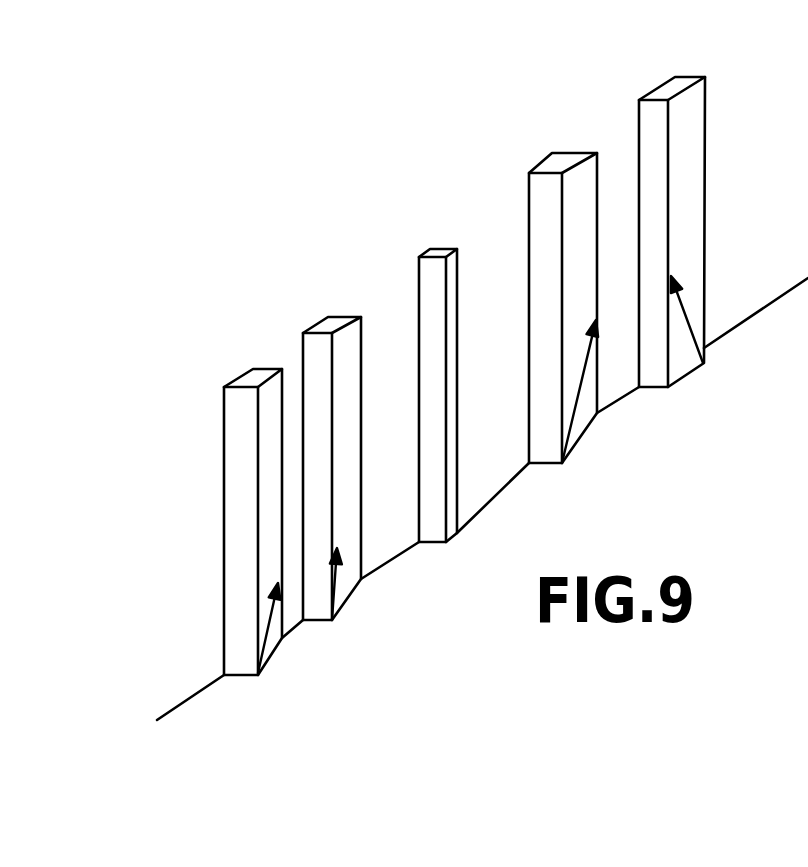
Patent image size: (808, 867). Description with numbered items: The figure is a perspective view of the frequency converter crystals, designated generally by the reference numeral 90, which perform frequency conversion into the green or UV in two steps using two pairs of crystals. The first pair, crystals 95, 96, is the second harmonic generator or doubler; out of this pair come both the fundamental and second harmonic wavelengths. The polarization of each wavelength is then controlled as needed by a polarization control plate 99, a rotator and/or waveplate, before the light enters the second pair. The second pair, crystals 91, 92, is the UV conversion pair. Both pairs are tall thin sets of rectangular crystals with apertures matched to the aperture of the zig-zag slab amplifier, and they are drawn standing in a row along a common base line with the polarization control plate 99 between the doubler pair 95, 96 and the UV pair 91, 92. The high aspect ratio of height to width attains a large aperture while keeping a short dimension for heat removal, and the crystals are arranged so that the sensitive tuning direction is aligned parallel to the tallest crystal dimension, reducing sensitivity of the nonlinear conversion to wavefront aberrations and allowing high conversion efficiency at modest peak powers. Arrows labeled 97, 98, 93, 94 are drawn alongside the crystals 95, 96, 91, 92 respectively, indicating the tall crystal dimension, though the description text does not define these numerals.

The frequency converter crystals 90 is at (192, 560).
The doubler crystal 95 is at (256, 378).
The doubler crystal 96 is at (323, 322).
The polarization control plate 99 is at (437, 251).
The UV conversion crystal 91 is at (550, 167).
The UV conversion crystal 92 is at (658, 88).
The height of first pillar 97 is at (263, 652).
The height of second pillar 98 is at (333, 619).
The height of fourth pillar 93 is at (572, 428).
The height of fifth pillar 94 is at (704, 316).